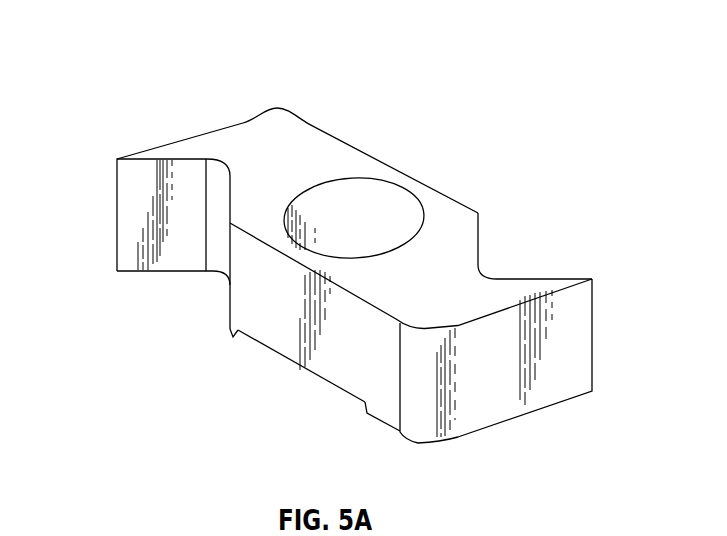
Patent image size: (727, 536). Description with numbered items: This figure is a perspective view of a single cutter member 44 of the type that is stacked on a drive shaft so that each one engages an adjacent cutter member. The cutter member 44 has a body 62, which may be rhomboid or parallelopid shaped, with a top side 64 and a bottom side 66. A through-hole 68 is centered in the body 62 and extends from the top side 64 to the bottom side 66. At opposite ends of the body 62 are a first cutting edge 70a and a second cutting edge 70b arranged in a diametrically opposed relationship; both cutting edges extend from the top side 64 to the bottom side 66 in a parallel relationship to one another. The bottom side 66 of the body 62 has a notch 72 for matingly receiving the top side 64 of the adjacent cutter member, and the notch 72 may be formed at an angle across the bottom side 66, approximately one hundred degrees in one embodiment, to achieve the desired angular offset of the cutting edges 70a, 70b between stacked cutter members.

The cutter member 44 is at (516, 68).
The body 62 is at (330, 126).
The top side 64 is at (465, 206).
The bottom side 66 is at (377, 420).
The through-hole 68 is at (400, 187).
The first cutting edge 70a is at (117, 208).
The second cutting edge 70b is at (592, 293).
The notch 72 is at (292, 362).